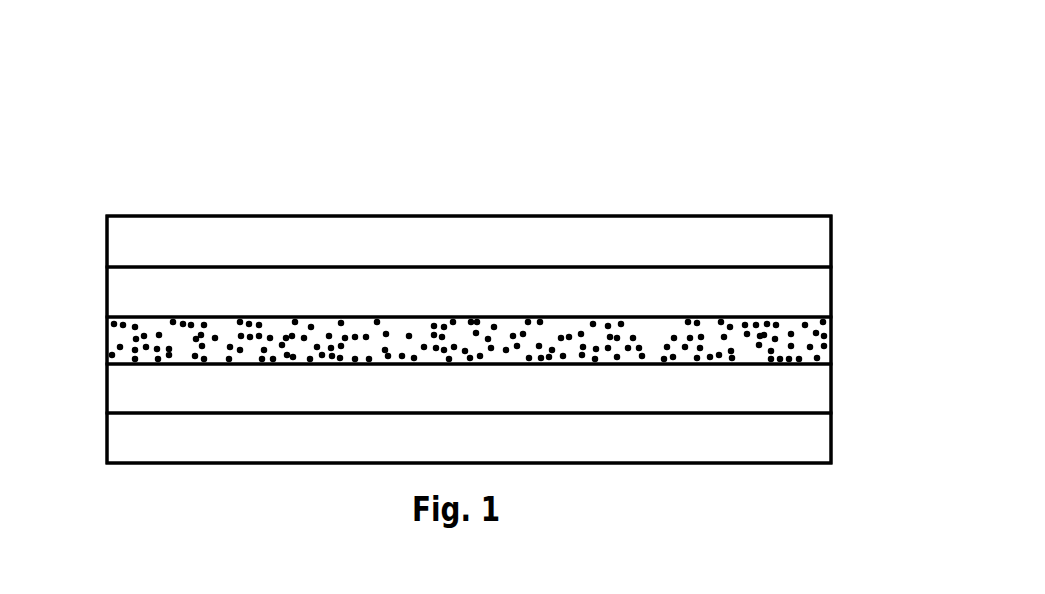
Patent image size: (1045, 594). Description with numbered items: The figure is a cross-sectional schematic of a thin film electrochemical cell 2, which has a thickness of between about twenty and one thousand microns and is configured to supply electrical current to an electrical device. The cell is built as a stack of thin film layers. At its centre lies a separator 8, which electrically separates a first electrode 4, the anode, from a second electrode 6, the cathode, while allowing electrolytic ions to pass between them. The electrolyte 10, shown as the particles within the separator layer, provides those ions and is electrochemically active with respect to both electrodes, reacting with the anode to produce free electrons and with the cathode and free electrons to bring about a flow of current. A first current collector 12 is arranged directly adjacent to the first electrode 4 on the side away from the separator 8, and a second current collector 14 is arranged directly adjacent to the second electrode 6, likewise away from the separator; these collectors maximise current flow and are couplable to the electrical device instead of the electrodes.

The electrochemical cell 2 is at (140, 87).
The first electrode 4 is at (788, 388).
The second electrode 6 is at (640, 292).
The separator 8 is at (430, 376).
The electrolyte 10 is at (150, 323).
The first current collector 12 is at (632, 440).
The second current collector 14 is at (792, 243).